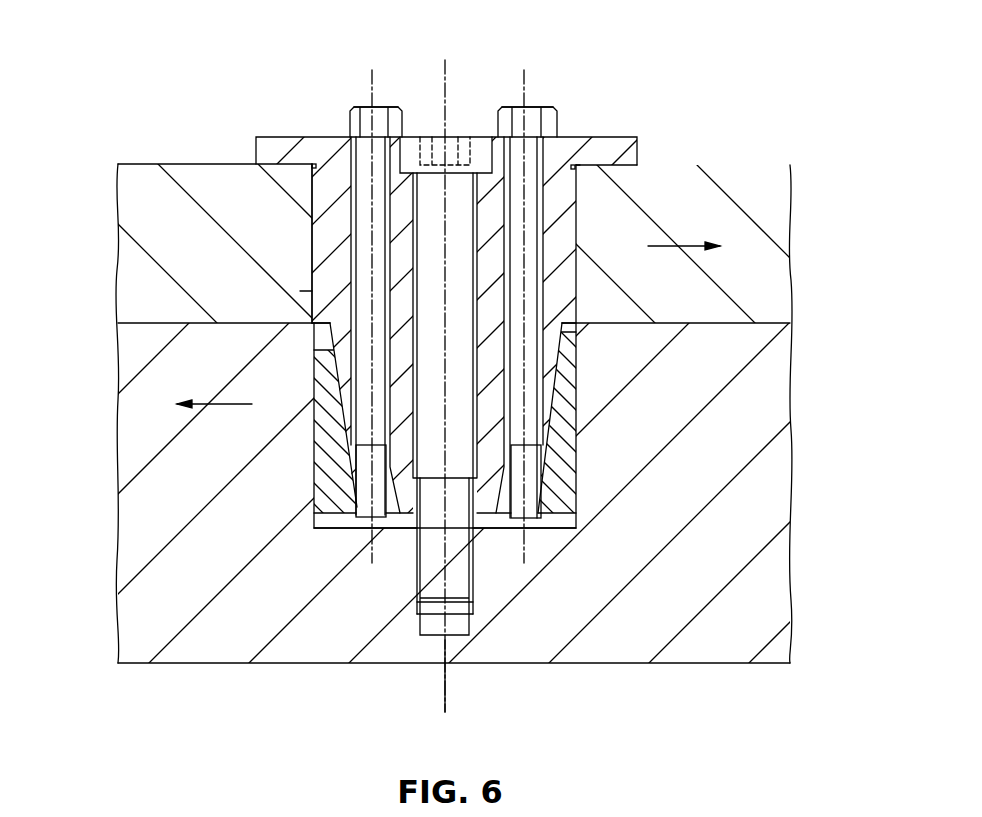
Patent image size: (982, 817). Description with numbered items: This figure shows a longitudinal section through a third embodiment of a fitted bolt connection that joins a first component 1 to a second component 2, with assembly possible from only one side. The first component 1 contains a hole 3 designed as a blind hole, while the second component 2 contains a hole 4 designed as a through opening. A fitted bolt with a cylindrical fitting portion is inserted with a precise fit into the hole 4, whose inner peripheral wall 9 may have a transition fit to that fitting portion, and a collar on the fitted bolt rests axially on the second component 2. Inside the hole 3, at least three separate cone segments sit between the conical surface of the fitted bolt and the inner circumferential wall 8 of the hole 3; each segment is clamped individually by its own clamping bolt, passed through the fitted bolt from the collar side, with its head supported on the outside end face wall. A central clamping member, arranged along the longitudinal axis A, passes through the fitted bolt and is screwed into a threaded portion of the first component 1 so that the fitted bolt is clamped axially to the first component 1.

The first component 1 is at (140, 404).
The second component 2 is at (157, 190).
The hole 3 is at (313, 457).
The hole 4 is at (312, 253).
The inner circumferential wall 8 is at (577, 363).
The inner peripheral wall 9 is at (310, 291).
The longitudinal axis A is at (448, 642).